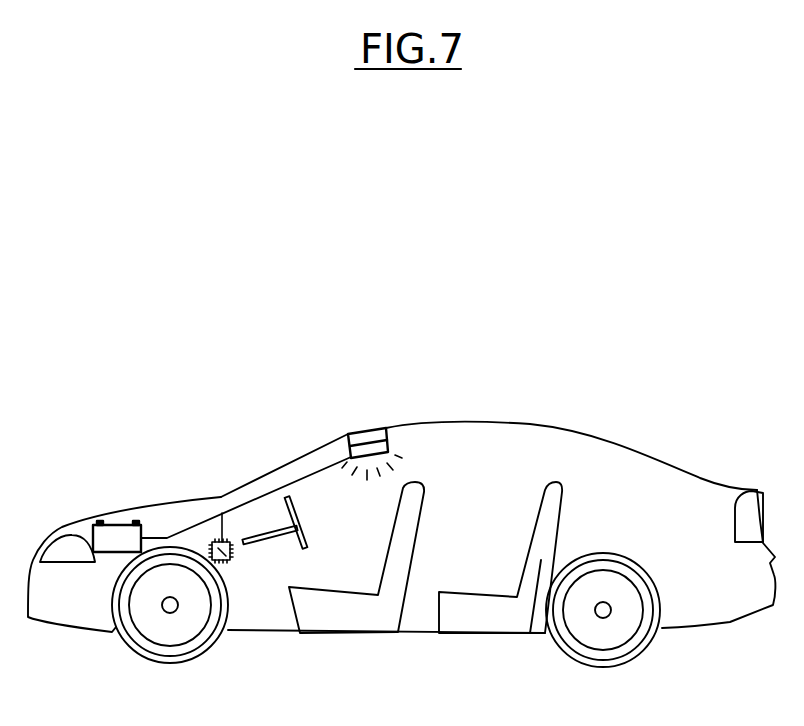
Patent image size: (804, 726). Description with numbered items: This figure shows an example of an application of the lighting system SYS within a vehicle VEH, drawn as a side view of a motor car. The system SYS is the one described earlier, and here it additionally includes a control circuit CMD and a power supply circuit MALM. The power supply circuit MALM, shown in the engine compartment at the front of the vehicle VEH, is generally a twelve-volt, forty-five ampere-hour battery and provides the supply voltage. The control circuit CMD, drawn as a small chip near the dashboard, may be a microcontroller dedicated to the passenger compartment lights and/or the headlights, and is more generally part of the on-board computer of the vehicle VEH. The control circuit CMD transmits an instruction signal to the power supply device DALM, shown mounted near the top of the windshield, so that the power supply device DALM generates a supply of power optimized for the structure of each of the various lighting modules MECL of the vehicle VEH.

The vehicle VEH is at (660, 462).
The power supply circuit MALM is at (120, 540).
The control circuit CMD is at (231, 561).
The power supply device DALM is at (375, 437).
The lighting system SYS is at (340, 432).
The lighting module MECL is at (388, 442).